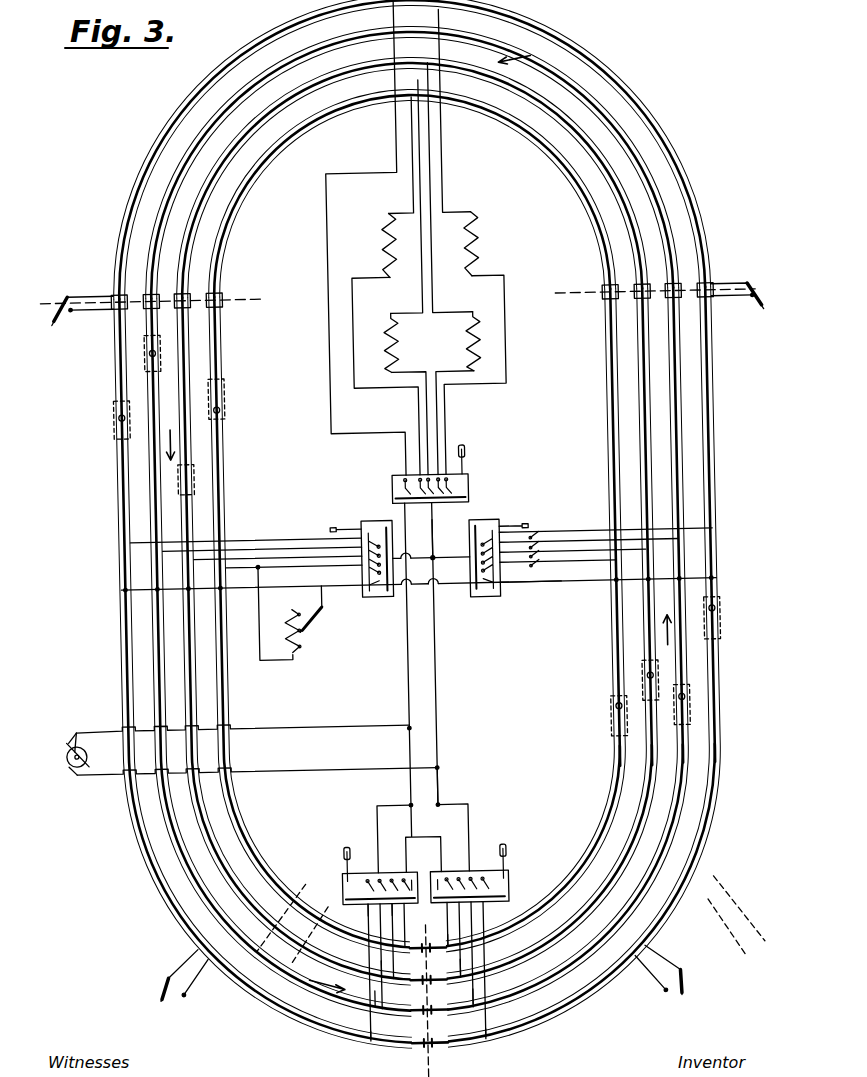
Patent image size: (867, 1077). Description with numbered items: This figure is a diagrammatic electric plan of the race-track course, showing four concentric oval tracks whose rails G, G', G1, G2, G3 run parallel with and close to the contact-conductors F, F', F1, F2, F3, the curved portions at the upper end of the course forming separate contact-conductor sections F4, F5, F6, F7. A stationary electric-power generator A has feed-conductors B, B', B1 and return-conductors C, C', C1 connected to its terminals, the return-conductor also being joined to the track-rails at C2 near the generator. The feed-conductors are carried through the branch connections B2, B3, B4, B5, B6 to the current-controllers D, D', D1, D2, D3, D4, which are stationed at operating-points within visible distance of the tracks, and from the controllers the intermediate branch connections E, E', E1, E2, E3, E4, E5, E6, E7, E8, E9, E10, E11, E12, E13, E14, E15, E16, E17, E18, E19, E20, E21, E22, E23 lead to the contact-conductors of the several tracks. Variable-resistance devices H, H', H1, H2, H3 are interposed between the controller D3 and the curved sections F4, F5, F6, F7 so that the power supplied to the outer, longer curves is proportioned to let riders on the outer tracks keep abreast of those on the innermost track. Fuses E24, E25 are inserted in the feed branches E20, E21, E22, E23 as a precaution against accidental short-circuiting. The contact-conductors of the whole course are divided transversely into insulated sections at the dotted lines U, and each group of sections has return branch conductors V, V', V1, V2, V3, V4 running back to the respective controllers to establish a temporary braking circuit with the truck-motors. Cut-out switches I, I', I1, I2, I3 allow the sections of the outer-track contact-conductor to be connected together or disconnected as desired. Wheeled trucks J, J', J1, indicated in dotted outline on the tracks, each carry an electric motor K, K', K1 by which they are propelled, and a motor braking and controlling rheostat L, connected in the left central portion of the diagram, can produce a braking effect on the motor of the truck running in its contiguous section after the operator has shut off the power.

The contact-conductor F is at (419, 623).
The contact-conductor F' is at (408, 639).
The contact-conductor F1 is at (408, 636).
The contact-conductor F2 is at (156, 645).
The contact-conductor F3 is at (722, 478).
The contact-conductor section F4 is at (272, 44).
The contact-conductor section F5 is at (311, 64).
The contact-conductor section F6 is at (329, 92).
The contact-conductor section F7 is at (347, 118).
The track-rails G is at (604, 764).
The track-rails G' is at (637, 778).
The track-rails G1 is at (638, 778).
The track-rails G2 is at (670, 816).
The track-rails G3 is at (704, 835).
The branch connection E is at (267, 736).
The branch connection E' is at (393, 960).
The branch connection E1 is at (392, 960).
The branch connection E2 is at (365, 987).
The branch connection E3 is at (360, 1027).
The branch connection E4 is at (448, 928).
The branch connection E5 is at (468, 956).
The branch connection E6 is at (470, 989).
The branch connection E7 is at (478, 1029).
The branch connection E8 is at (258, 568).
The branch connection E9 is at (278, 569).
The branch connection E10 is at (263, 566).
The branch connection E11 is at (246, 561).
The branch connection E12 is at (372, 387).
The branch connection E13 is at (394, 374).
The branch connection E14 is at (476, 372).
The branch connection E15 is at (509, 387).
The branch connection E16 is at (388, 224).
The branch connection E17 is at (427, 299).
The branch connection E18 is at (440, 295).
The branch connection E19 is at (485, 217).
The feed branch wire E20 is at (558, 570).
The feed branch wire E21 is at (573, 557).
The feed branch wire E22 is at (589, 550).
The feed branch wire E23 is at (588, 551).
The fuse E24 is at (606, 547).
The fuse E25 is at (540, 540).
The variable-resistance device H is at (399, 343).
The variable-resistance device H' is at (405, 245).
The variable-resistance device H1 is at (405, 245).
The variable-resistance device H2 is at (470, 244).
The variable-resistance device H3 is at (477, 346).
The controller D is at (369, 944).
The controller D' is at (483, 942).
The controller D1 is at (482, 873).
The controller D2 is at (378, 597).
The controller D3 is at (392, 484).
The controller D4 is at (492, 598).
The feed-conductor B is at (267, 657).
The feed-conductor B' is at (450, 786).
The feed-conductor B1 is at (450, 786).
The branch connection B2 is at (370, 808).
The branch connection B3 is at (469, 809).
The branch connection B4 is at (418, 557).
The branch connection B5 is at (433, 538).
The branch connection B6 is at (434, 558).
The return-conductor C is at (242, 657).
The return-conductor C' is at (409, 821).
The return-conductor C1 is at (409, 821).
The rail connection C2 is at (120, 722).
The electric-power generator A is at (60, 752).
The motor braking and controlling rheostat L is at (282, 618).
The return branch conductor V is at (359, 913).
The return branch conductor V' is at (401, 912).
The return branch conductor V1 is at (401, 912).
The return branch conductor V2 is at (349, 584).
The return branch conductor V3 is at (334, 431).
The return branch conductor V4 is at (552, 588).
The cut-out switch I is at (181, 982).
The cut-out switch I' is at (76, 314).
The cut-out switch I1 is at (76, 314).
The cut-out switch I2 is at (765, 310).
The cut-out switch I3 is at (671, 1001).
The wheeled truck J is at (426, 538).
The wheeled truck J' is at (227, 399).
The wheeled truck J1 is at (227, 399).
The electric motor K is at (432, 530).
The electric motor K' is at (231, 409).
The electric motor K1 is at (231, 409).
The section line U is at (405, 677).